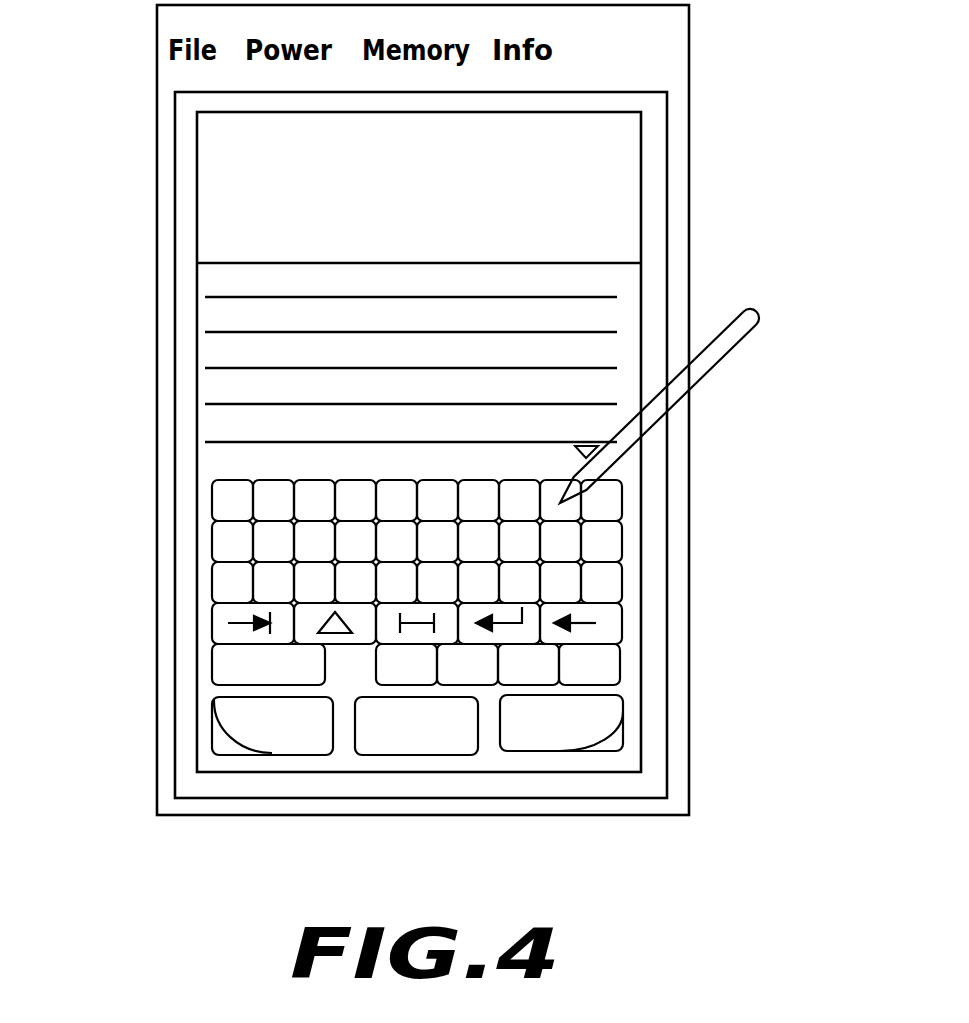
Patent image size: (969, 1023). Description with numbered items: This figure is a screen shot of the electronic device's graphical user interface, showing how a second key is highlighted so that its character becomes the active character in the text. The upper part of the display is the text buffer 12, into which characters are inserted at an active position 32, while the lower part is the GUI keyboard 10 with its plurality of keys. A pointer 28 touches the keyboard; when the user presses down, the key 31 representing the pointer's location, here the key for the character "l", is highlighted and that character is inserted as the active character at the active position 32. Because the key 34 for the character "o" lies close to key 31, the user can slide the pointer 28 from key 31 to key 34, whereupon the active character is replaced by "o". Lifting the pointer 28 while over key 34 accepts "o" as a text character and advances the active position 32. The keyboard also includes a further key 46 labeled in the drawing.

The GUI keyboard 10 is at (105, 492).
The text buffer 12 is at (105, 295).
The pointer 28 is at (718, 358).
The key 31 is at (560, 503).
The active position 32 is at (612, 480).
The key 34 is at (578, 512).
The key (g) 46 is at (393, 548).